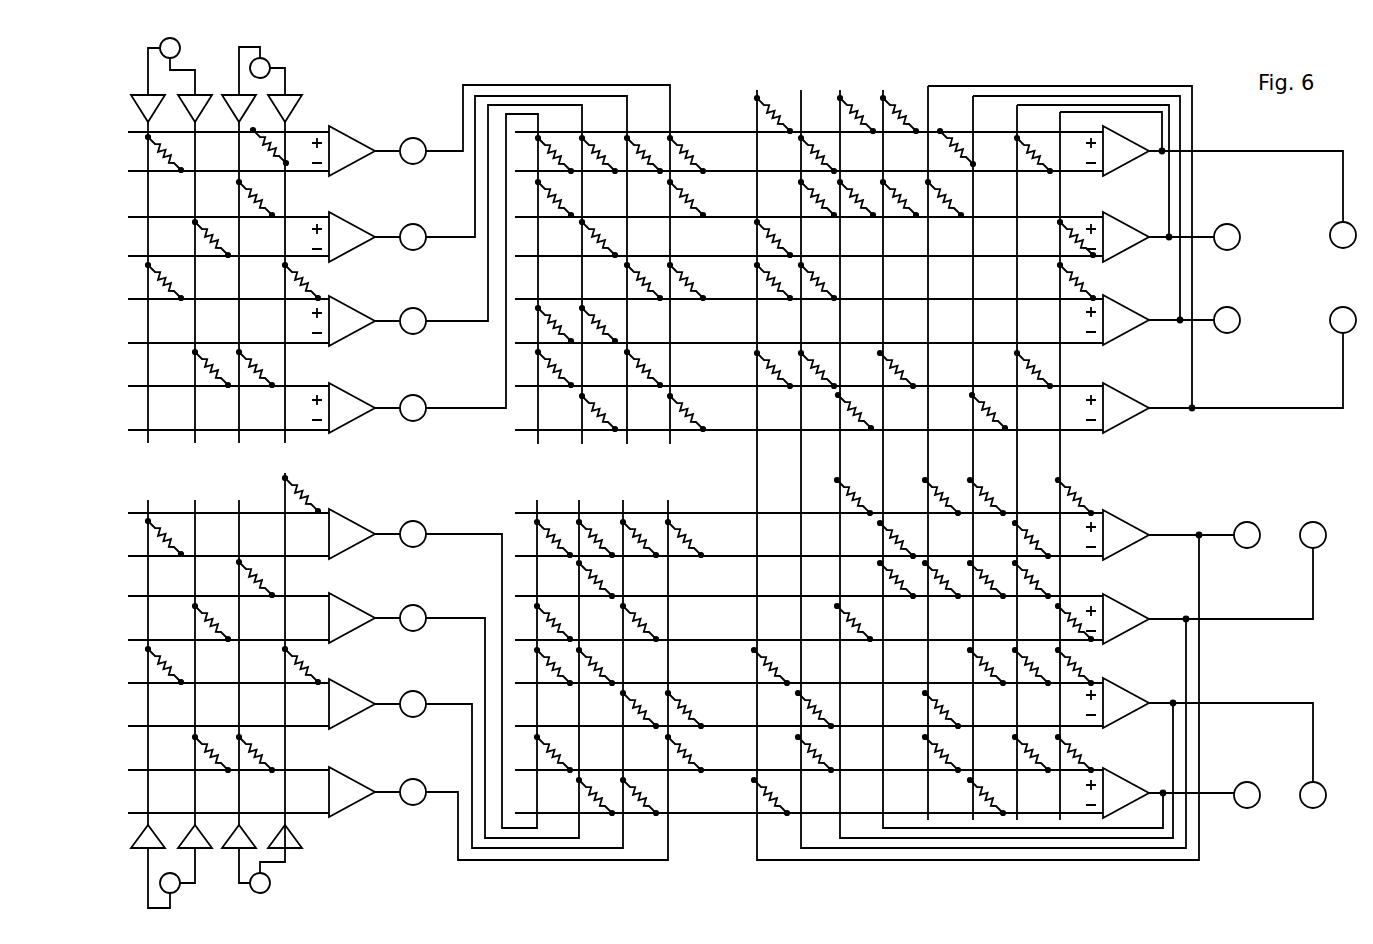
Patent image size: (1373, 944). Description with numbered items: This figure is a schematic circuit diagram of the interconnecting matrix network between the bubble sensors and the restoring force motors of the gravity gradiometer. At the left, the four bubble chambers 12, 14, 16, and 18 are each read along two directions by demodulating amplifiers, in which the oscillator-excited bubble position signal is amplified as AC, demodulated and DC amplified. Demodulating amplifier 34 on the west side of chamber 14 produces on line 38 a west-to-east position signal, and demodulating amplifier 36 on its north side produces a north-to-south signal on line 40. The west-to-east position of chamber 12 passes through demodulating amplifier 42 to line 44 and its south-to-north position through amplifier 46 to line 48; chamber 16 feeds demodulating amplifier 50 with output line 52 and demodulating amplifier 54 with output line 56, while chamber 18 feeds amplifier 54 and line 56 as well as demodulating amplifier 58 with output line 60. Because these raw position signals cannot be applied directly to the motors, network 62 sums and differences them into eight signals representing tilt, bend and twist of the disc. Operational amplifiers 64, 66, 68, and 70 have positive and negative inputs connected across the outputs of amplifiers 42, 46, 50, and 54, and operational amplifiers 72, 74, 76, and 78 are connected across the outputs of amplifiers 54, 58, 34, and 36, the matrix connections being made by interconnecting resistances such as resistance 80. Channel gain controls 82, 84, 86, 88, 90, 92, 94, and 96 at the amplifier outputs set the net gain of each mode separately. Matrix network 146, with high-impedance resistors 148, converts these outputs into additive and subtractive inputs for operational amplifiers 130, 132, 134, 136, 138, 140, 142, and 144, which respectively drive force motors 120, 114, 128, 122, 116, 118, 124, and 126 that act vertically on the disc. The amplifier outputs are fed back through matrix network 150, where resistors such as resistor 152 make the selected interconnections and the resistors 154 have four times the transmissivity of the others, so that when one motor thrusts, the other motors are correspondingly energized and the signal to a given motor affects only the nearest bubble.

The bubble chamber 12 is at (180, 50).
The bubble chamber 14 is at (269, 892).
The bubble chamber 16 is at (266, 62).
The bubble chamber 18 is at (180, 892).
The demodulating amplifier 34 is at (236, 840).
The demodulating amplifier 36 is at (281, 840).
The output line 38 is at (238, 510).
The output line 40 is at (286, 477).
The demodulating amplifier 42 is at (133, 96).
The amplifier output line 44 is at (145, 186).
The demodulation amplifier 46 is at (196, 102).
The amplifier output line 48 is at (192, 432).
The demodulating amplifier 50 is at (236, 106).
The amplifier output line 52 is at (240, 436).
The demodulating amplifier 54 is at (290, 101).
The amplifier output line 56 is at (286, 191).
The demodulating amplifier 58 is at (192, 840).
The amplifier output line 60 is at (194, 510).
The network 62 is at (311, 858).
The operational amplifier 64 is at (350, 145).
The operational amplifier 66 is at (350, 231).
The operational amplifier 68 is at (350, 316).
The operational amplifier 70 is at (350, 402).
The operational amplifier 72 is at (350, 528).
The operational amplifier 74 is at (350, 612).
The operational amplifier 76 is at (350, 698).
The operational amplifier 78 is at (350, 786).
The resistance 80 is at (150, 279).
The channel gain control 82 is at (418, 142).
The channel gain control 84 is at (418, 228).
The channel gain control 86 is at (418, 312).
The channel gain control 88 is at (418, 399).
The channel gain control 90 is at (418, 525).
The channel gain control 92 is at (418, 609).
The channel gain control 94 is at (418, 695).
The channel gain control 96 is at (418, 783).
The force motor 114 is at (1235, 212).
The force motor 116 is at (1247, 523).
The force motor 118 is at (1313, 523).
The force motor 120 is at (1343, 249).
The force motor 122 is at (1345, 302).
The force motor 124 is at (1316, 808).
The force motor 126 is at (1249, 808).
The force motor 128 is at (1235, 295).
The operational amplifier 130 is at (1122, 158).
The operational amplifier 132 is at (1122, 244).
The operational amplifier 134 is at (1122, 327).
The operational amplifier 136 is at (1122, 415).
The operational amplifier 138 is at (1122, 542).
The operational amplifier 140 is at (1122, 626).
The operational amplifier 142 is at (1122, 712).
The operational amplifier 144 is at (1125, 788).
The matrix network 146 is at (678, 71).
The resistor 148 is at (682, 146).
The matrix network 150 is at (958, 73).
The resistor 152 is at (766, 104).
The resistor 154 is at (850, 104).